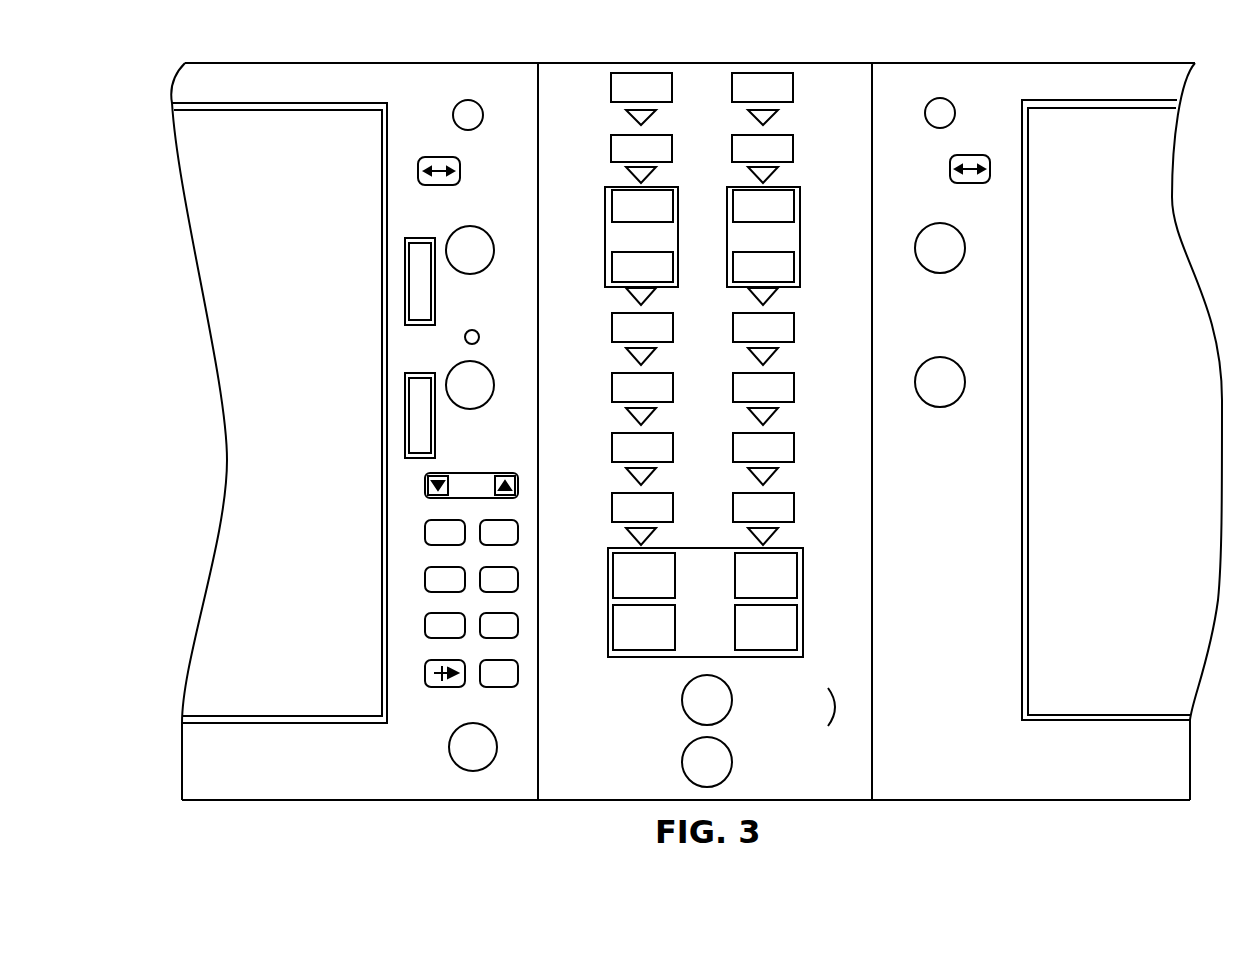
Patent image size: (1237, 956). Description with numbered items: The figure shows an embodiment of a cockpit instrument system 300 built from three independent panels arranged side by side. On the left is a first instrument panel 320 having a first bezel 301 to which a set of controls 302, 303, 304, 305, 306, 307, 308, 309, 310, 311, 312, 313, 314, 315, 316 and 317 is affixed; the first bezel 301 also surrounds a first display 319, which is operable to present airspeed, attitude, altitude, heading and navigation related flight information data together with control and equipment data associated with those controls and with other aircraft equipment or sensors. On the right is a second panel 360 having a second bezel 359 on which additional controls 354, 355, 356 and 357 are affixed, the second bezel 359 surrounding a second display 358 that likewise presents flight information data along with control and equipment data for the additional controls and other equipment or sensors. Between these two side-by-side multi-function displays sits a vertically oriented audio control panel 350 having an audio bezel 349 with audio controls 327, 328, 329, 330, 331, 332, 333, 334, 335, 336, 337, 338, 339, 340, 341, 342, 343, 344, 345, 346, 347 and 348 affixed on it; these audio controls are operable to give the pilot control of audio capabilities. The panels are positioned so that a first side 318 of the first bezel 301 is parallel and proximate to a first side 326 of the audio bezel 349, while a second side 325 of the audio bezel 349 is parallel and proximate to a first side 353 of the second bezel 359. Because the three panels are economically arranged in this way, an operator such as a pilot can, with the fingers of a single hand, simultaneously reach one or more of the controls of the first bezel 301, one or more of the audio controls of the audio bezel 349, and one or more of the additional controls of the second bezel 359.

The cockpit instrument system 300 is at (952, 808).
The first bezel 301 is at (368, 63).
The control 302 is at (457, 104).
The control 303 is at (418, 169).
The control 304 is at (470, 274).
The control 305 is at (405, 279).
The control 306 is at (470, 409).
The control 307 is at (405, 411).
The control 308 is at (518, 485).
The control 309 is at (425, 533).
The control 310 is at (518, 533).
The control 311 is at (425, 580).
The control 312 is at (518, 580).
The control 313 is at (425, 626).
The control 314 is at (518, 626).
The control 315 is at (518, 673).
The control 316 is at (425, 673).
The control 317 is at (449, 747).
The first side of the first bezel 318 is at (533, 288).
The first display 319 is at (250, 156).
The first instrument panel 320 is at (262, 63).
The second side of the audio bezel 325 is at (872, 750).
The first side of the audio bezel 326 is at (538, 743).
The audio control 327 is at (682, 762).
The audio control 328 is at (682, 700).
The audio control 329 is at (797, 573).
The audio control 330 is at (797, 625).
The audio control 331 is at (675, 625).
The audio control 332 is at (675, 573).
The audio control 333 is at (794, 507).
The audio control 334 is at (673, 507).
The audio control 335 is at (794, 447).
The audio control 336 is at (673, 447).
The audio control 337 is at (794, 387).
The audio control 338 is at (673, 387).
The audio control 339 is at (794, 327).
The audio control 340 is at (673, 327).
The audio control 341 is at (673, 205).
The audio control 342 is at (794, 205).
The audio control 343 is at (673, 267).
The audio control 344 is at (794, 267).
The audio control 345 is at (793, 148).
The audio control 346 is at (672, 148).
The audio control 347 is at (793, 87).
The audio control 348 is at (672, 87).
The audio bezel 349 is at (808, 70).
The audio control panel 350 is at (708, 63).
The first side of the second bezel 353 is at (951, 713).
The additional control 354 is at (940, 407).
The additional control 355 is at (940, 273).
The additional control 356 is at (980, 155).
The additional control 357 is at (952, 103).
The second display 358 is at (1133, 154).
The second bezel 359 is at (1128, 70).
The second panel 360 is at (1015, 63).